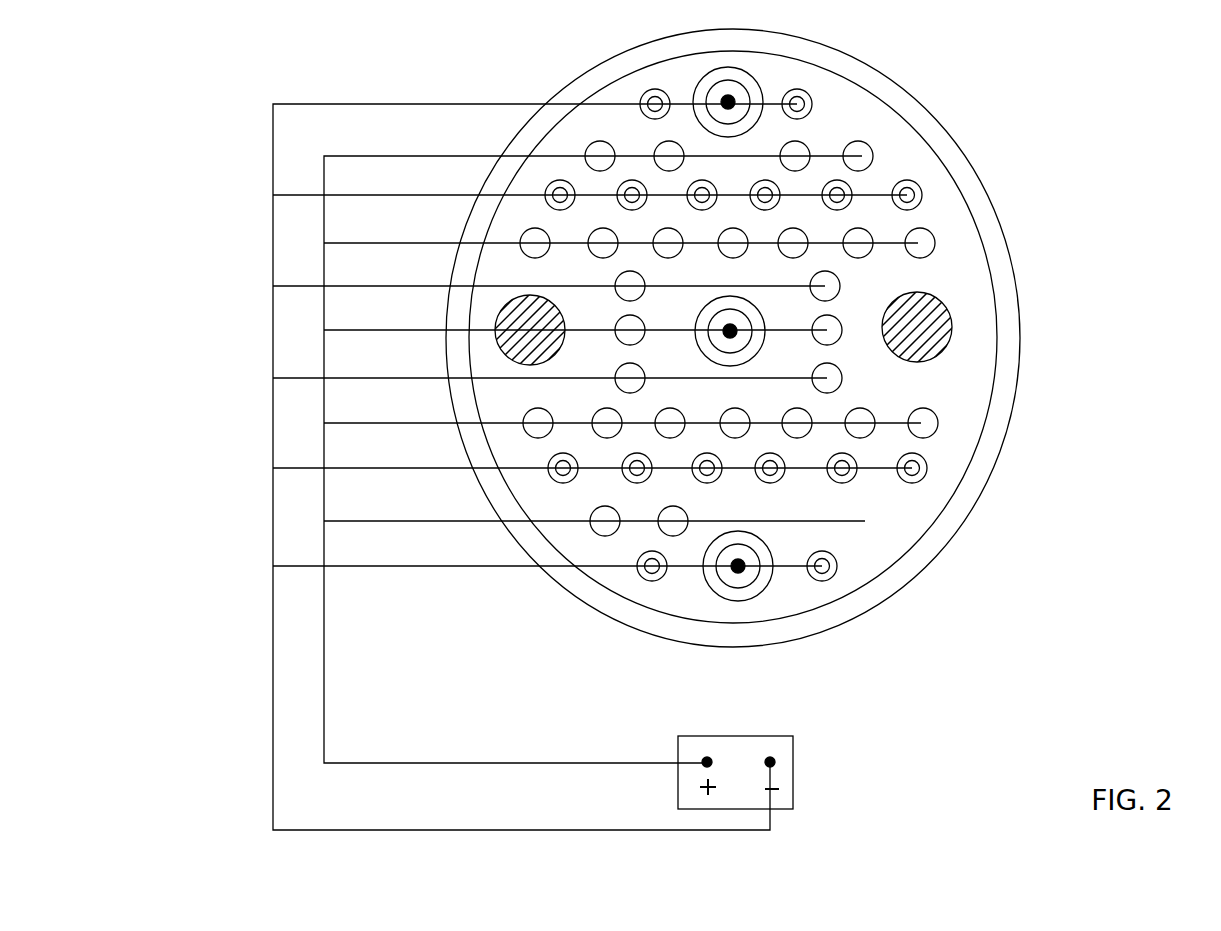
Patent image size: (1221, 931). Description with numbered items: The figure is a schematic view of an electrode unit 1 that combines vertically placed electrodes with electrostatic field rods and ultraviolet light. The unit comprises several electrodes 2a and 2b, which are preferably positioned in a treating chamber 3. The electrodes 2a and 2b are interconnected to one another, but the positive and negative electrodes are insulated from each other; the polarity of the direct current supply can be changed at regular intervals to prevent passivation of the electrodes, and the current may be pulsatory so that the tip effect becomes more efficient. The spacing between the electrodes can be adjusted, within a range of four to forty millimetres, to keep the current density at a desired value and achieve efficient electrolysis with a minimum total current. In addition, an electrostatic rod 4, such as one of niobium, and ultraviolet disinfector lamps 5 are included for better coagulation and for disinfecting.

The electrode unit 1 is at (797, 755).
The electrode 2a is at (273, 733).
The electrode 2b is at (423, 762).
The treating chamber 3 is at (877, 72).
The electrostatic rod 4 is at (750, 70).
The ultraviolet disinfector lamp 5 is at (520, 302).